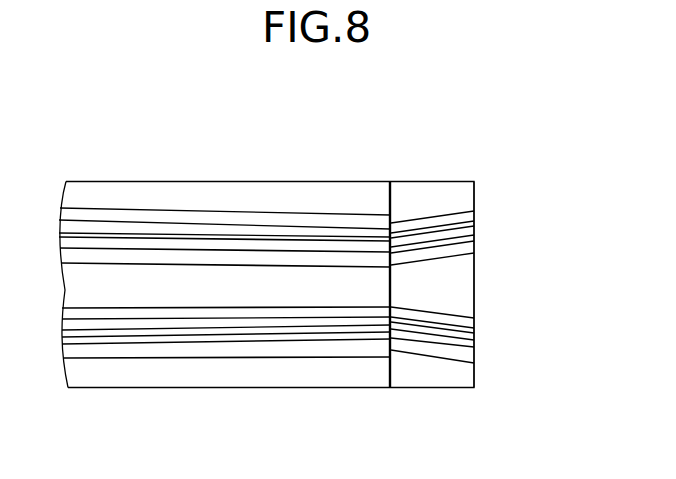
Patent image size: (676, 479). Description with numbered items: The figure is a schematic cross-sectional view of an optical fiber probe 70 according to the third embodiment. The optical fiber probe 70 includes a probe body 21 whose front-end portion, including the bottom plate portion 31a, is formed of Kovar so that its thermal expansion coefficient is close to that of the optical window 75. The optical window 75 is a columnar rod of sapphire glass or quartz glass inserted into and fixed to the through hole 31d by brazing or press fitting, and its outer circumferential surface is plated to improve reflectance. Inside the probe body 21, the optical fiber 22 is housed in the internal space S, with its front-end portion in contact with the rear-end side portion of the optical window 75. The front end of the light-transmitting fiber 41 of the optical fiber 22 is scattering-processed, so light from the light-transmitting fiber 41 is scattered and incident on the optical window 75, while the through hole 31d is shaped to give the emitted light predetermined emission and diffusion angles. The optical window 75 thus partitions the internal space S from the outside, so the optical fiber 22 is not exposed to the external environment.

The probe body 21 is at (185, 172).
The optical fiber 22 is at (252, 368).
The light-transmitting fiber 41 is at (352, 248).
The optical fiber probe 70 is at (323, 157).
The optical window 75 is at (475, 217).
The bottom plate portion 31a is at (475, 280).
The through hole 31d is at (423, 357).
The internal space S is at (169, 296).